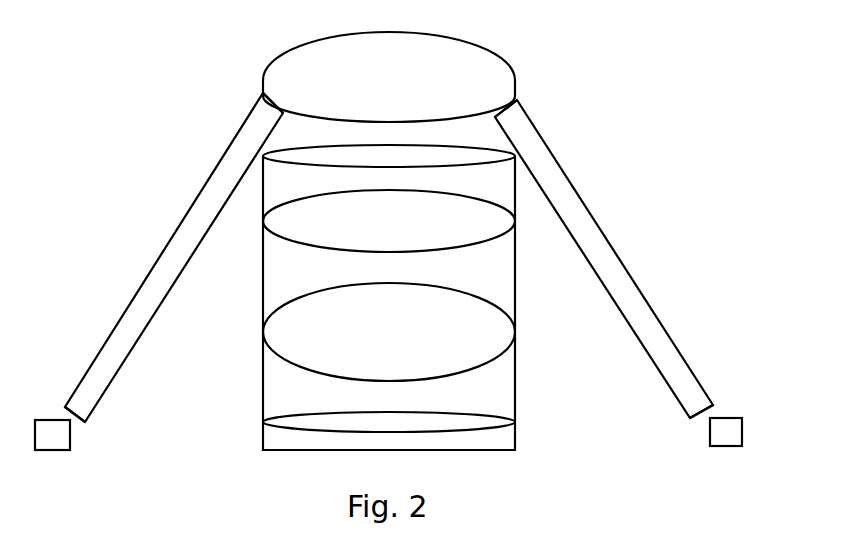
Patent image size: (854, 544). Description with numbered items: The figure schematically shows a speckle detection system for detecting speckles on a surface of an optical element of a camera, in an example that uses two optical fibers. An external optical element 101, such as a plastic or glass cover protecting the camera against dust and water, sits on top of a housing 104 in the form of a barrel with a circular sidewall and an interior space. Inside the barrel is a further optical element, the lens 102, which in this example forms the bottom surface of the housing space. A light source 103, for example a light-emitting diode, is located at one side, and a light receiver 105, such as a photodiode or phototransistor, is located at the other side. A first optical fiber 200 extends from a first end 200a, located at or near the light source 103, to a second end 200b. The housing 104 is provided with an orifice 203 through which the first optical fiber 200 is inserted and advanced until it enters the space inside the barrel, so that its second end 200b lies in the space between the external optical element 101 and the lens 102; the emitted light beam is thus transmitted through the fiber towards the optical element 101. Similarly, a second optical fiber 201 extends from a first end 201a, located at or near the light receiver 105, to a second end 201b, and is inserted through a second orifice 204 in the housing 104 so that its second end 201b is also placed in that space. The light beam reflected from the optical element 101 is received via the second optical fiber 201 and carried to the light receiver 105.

The optical element 101 is at (458, 65).
The lens 102 is at (481, 163).
The light source 103 is at (70, 445).
The housing 104 is at (518, 387).
The light receiver 105 is at (737, 428).
The first optical fiber 200 is at (177, 222).
The first end of the first optical fiber 200a is at (65, 405).
The second end of the first optical fiber 200b is at (263, 93).
The second optical fiber 201 is at (600, 208).
The first end of the second optical fiber 201a is at (703, 392).
The second end of the second optical fiber 201b is at (515, 97).
The orifice 203 is at (268, 110).
The second orifice 204 is at (523, 105).